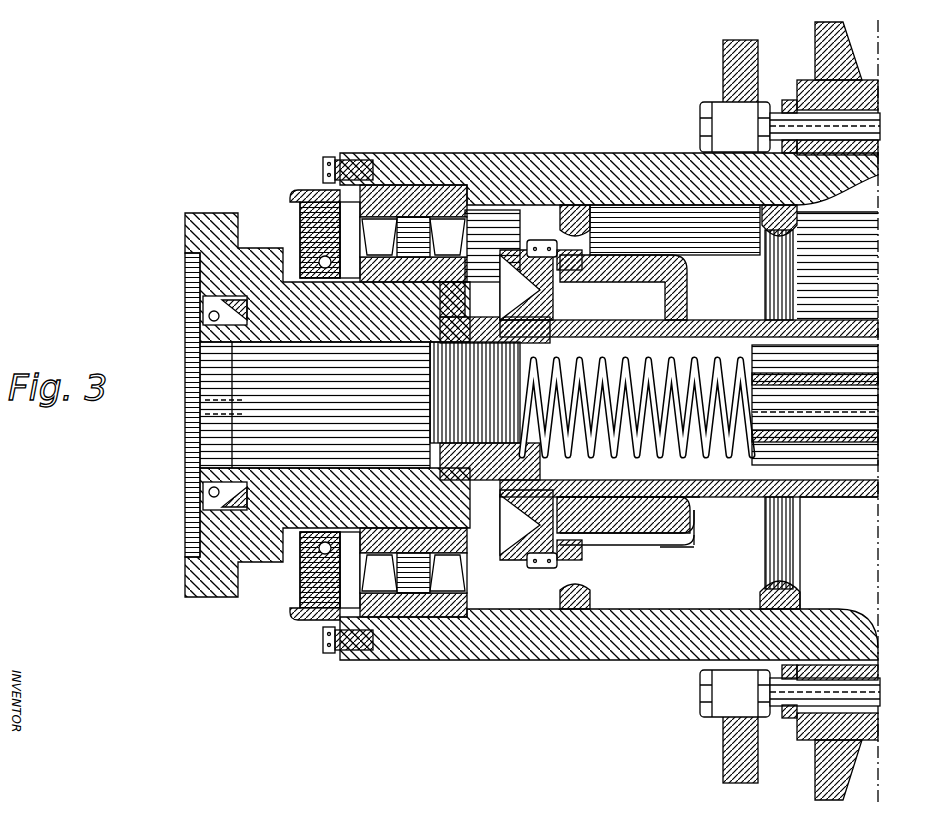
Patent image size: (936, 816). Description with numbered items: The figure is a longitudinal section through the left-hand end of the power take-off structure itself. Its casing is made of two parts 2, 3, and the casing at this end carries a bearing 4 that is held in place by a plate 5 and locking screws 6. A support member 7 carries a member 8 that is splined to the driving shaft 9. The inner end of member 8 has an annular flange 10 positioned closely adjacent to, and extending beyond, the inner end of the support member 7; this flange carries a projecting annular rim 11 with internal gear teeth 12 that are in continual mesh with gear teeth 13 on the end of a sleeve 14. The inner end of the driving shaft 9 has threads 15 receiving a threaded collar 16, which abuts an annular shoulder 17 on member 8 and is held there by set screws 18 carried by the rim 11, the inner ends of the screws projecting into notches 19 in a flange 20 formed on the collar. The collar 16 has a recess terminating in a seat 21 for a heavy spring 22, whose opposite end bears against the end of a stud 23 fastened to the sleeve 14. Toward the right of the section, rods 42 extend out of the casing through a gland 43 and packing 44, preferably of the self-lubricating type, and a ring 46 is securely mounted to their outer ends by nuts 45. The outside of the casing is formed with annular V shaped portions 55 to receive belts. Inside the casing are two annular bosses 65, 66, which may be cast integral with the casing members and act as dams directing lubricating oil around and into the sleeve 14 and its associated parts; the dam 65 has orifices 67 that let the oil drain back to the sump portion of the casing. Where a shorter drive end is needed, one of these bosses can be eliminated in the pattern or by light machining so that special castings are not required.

The casing part 2 is at (582, 255).
The casing part 3 is at (553, 663).
The roller bearing 4 is at (405, 235).
The plate 5 is at (296, 192).
The locking screws 6 is at (327, 158).
The support member 7 is at (222, 216).
The member 8 is at (195, 333).
The driving shaft 9 is at (215, 420).
The annular flange 10 is at (515, 545).
The annular rim 11 is at (658, 560).
The internal gear teeth 12 is at (683, 525).
The gear teeth 13 is at (620, 547).
The sleeve 14 is at (828, 499).
The threads 15 is at (527, 280).
The threaded collar 16 is at (502, 523).
The annular shoulder 17 is at (475, 340).
The set screws 18 is at (543, 240).
The notches 19 is at (600, 250).
The flange 20 is at (690, 297).
The seat 21 is at (600, 471).
The heavy spring 22 is at (725, 497).
The stud 23 is at (838, 368).
The rods 42 is at (880, 127).
The gland 43 is at (782, 100).
The packing 44 is at (797, 82).
The nuts 45 is at (720, 697).
The ring 46 is at (723, 80).
The annular V shaped portions 55 is at (854, 62).
The annular boss 65 is at (795, 212).
The annular boss 66 is at (597, 253).
The orifices 67 is at (850, 192).